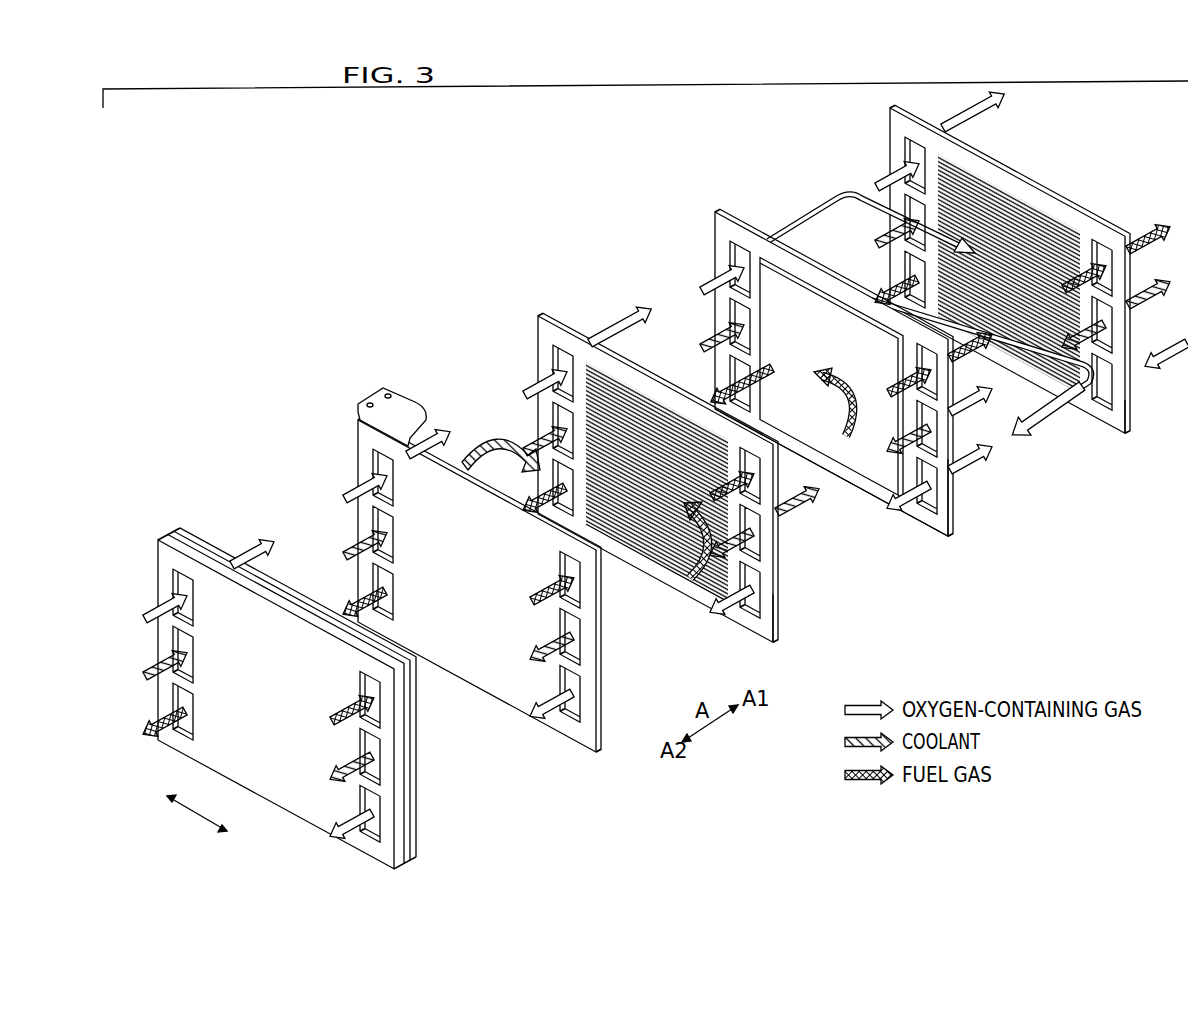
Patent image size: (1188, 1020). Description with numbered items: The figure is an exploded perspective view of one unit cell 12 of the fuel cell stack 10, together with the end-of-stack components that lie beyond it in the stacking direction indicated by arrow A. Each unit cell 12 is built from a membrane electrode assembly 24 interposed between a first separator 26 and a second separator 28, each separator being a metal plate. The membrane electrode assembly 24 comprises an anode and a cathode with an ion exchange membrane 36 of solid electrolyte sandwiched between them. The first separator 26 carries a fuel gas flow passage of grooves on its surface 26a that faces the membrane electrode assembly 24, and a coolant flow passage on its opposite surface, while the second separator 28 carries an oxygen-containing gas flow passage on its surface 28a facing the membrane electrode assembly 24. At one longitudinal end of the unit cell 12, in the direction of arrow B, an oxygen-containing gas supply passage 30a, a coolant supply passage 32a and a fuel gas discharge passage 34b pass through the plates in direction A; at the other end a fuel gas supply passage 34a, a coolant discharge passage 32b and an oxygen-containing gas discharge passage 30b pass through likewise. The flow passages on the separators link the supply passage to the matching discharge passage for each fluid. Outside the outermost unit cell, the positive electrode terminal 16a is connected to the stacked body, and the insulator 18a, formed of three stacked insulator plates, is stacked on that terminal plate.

The fuel cell stack 10 is at (307, 314).
The unit cell 12 is at (629, 157).
The positive electrode terminal 16a is at (373, 390).
The insulator 18a is at (166, 522).
The membrane electrode assembly 24 is at (730, 210).
The first separator 26 is at (552, 322).
The surface of first separator 26a is at (742, 612).
The second separator 28 is at (1025, 172).
The surface of second separator 28a is at (1108, 420).
The oxygen-containing gas supply passage 30a is at (178, 583).
The oxygen-containing gas discharge passage 30b is at (385, 822).
The coolant supply passage 32a is at (178, 636).
The coolant discharge passage 32b is at (385, 767).
The fuel gas supply passage 34a is at (385, 710).
The fuel gas discharge passage 34b is at (178, 699).
The ion exchange membrane 36 is at (925, 522).